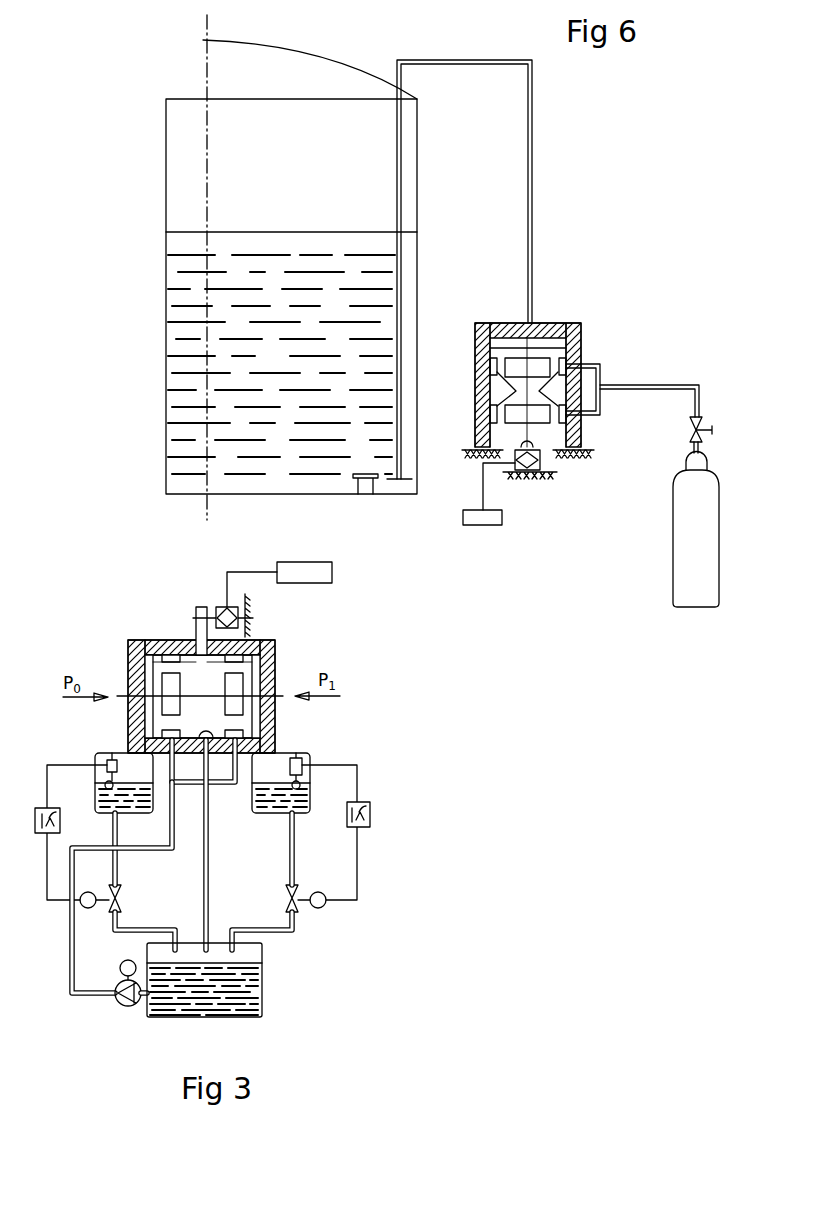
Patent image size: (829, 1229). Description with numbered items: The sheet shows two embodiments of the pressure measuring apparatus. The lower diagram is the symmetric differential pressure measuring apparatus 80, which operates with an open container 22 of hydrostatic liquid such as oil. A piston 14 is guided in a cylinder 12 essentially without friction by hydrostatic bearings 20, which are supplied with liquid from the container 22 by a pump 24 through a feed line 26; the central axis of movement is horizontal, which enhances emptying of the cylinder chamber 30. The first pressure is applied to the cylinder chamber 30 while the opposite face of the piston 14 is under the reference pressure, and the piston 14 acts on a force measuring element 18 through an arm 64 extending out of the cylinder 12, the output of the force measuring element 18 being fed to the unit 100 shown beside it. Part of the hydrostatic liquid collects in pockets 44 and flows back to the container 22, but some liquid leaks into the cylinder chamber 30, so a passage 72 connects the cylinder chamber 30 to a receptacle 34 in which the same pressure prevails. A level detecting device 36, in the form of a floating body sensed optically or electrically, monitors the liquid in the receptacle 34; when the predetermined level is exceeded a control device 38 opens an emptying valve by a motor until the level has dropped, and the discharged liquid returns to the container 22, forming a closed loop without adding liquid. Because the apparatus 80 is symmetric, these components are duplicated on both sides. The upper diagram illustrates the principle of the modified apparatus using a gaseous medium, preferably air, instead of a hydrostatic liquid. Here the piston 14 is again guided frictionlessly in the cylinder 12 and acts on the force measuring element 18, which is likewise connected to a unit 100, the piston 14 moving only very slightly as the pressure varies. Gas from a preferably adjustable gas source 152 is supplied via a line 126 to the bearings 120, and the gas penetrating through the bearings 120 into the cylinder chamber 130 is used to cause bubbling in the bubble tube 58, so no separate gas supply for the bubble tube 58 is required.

In FIG. 6, the cylinder 12 is at (475, 333).
In FIG. 6, the piston 14 is at (477, 455).
In FIG. 3, the piston 14 is at (188, 662).
In FIG. 6, the force measuring element 18 is at (541, 462).
In FIG. 3, the force measuring element 18 is at (216, 612).
In FIG. 3, the hydrostatic bearings 20 is at (233, 728).
In FIG. 3, the container 22 is at (262, 988).
In FIG. 3, the pump 24 is at (128, 1002).
In FIG. 3, the feed line 26 is at (174, 852).
In FIG. 3, the cylinder chamber 30 is at (130, 667).
In FIG. 3, the receptacle 34 is at (131, 815).
In FIG. 3, the level detecting device 36 is at (118, 766).
In FIG. 3, the control device 38 is at (45, 808).
In FIG. 3, the pockets 44 is at (198, 757).
In FIG. 6, the bubble tube 58 is at (532, 133).
In FIG. 3, the arm 64 is at (196, 612).
In FIG. 3, the passage 72 is at (132, 740).
In FIG. 3, the differential pressure measuring apparatus 80 is at (282, 625).
In FIG. 6, the recorder 100 is at (503, 518).
In FIG. 3, the recorder 100 is at (322, 575).
In FIG. 6, the bearings 120 is at (528, 390).
In FIG. 6, the line 126 is at (651, 390).
In FIG. 6, the cylinder chamber 130 is at (505, 343).
In FIG. 6, the gas source 152 is at (690, 540).